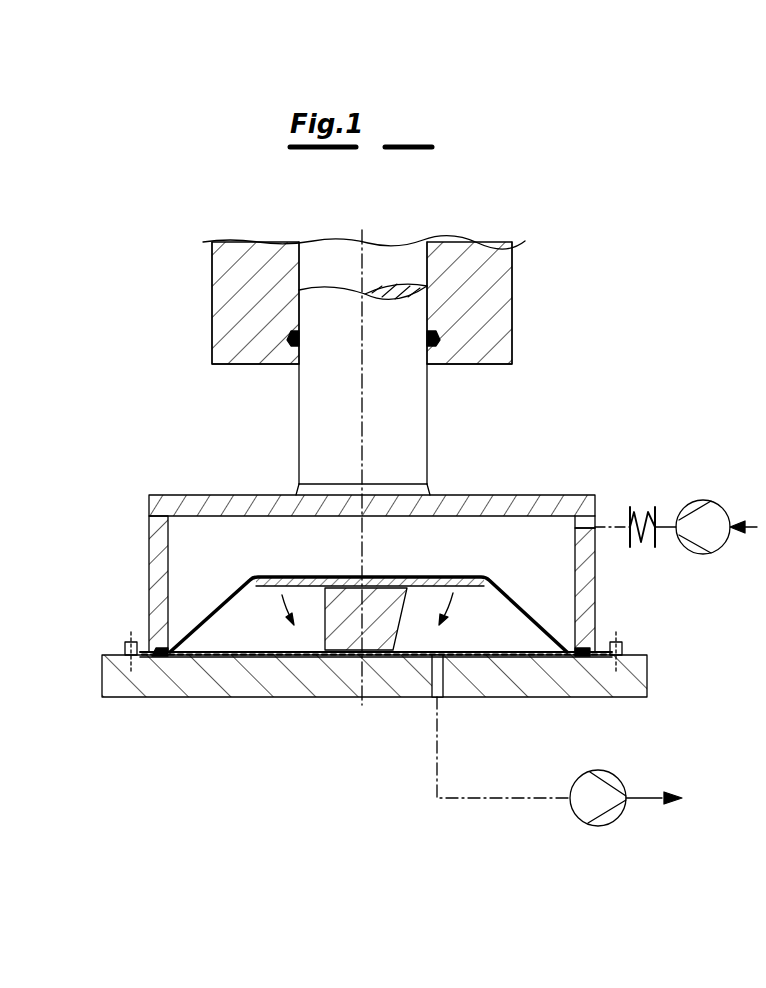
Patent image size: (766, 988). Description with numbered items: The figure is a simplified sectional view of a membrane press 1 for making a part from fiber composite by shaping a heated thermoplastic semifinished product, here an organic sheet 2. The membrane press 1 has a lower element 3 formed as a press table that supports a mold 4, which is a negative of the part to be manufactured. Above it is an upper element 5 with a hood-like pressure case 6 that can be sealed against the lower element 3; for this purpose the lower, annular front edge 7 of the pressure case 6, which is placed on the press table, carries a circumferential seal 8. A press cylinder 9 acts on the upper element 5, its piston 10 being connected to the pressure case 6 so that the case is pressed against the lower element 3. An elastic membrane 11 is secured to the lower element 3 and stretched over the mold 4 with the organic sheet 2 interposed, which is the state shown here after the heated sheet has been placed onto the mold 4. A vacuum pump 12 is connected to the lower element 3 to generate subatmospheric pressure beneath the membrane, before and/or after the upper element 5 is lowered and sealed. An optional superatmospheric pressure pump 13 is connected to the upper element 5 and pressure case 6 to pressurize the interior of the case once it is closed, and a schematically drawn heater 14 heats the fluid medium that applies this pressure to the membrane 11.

The membrane press 1 is at (658, 297).
The organic sheet 2 is at (440, 580).
The lower element 3 is at (262, 680).
The mold 4 is at (349, 637).
The upper element 5 is at (366, 513).
The pressure case 6 is at (222, 503).
The lower annular front edge 7 is at (152, 672).
The circumferential seal 8 is at (160, 638).
The press cylinder 9 is at (484, 205).
The piston 10 is at (428, 438).
The elastic membrane 11 is at (498, 592).
The vacuum pump 12 is at (587, 816).
The superatmospheric pressure pump 13 is at (705, 518).
The heater 14 is at (647, 568).